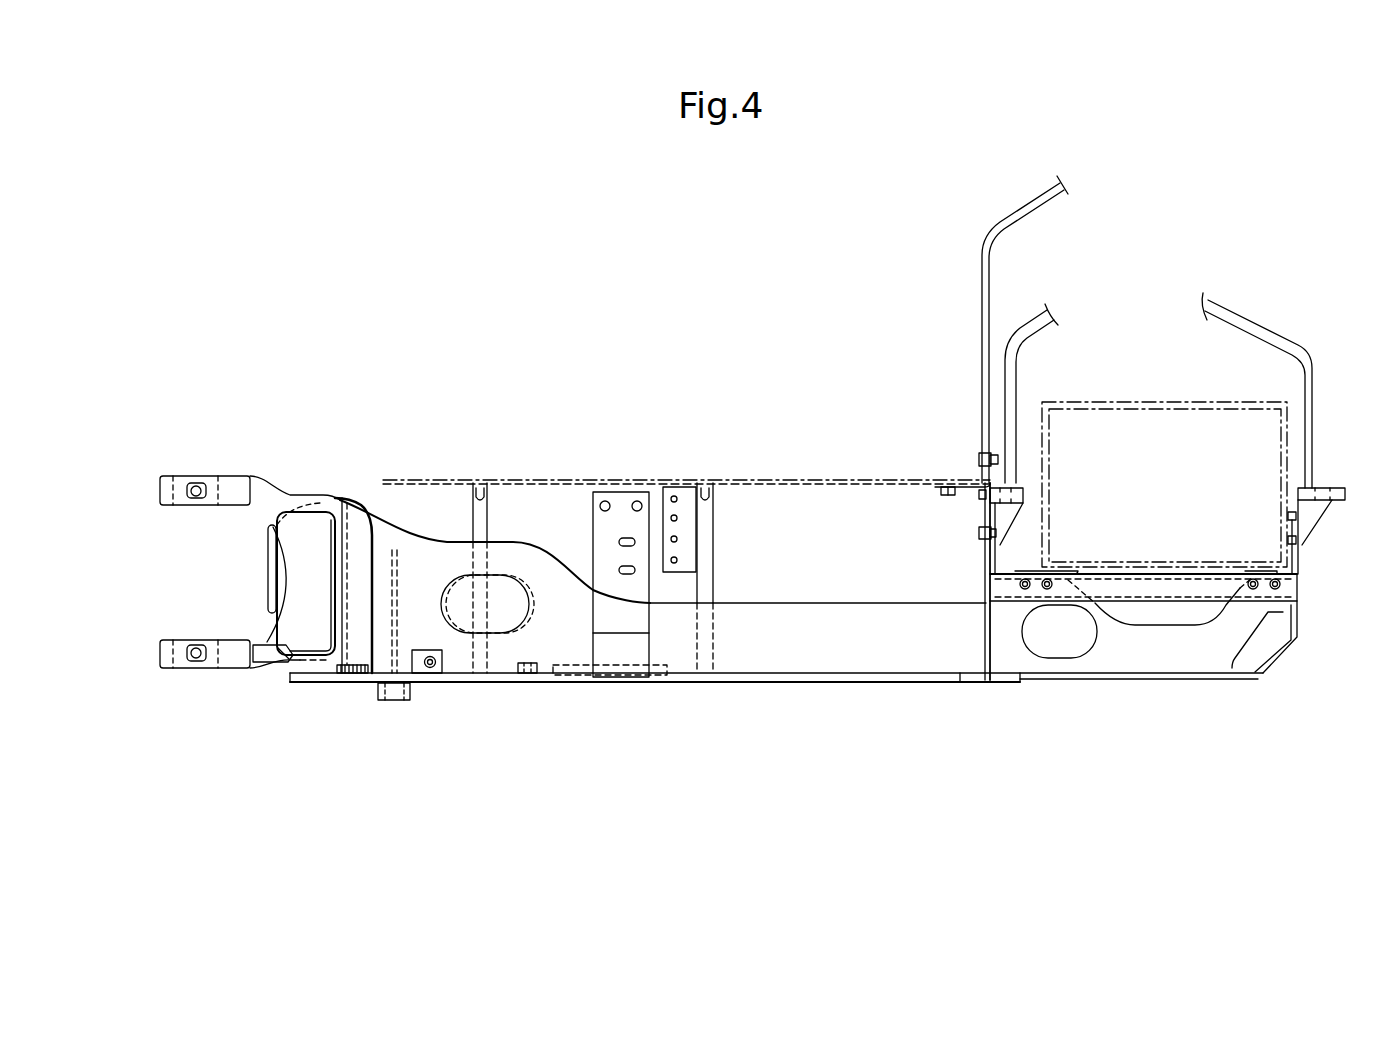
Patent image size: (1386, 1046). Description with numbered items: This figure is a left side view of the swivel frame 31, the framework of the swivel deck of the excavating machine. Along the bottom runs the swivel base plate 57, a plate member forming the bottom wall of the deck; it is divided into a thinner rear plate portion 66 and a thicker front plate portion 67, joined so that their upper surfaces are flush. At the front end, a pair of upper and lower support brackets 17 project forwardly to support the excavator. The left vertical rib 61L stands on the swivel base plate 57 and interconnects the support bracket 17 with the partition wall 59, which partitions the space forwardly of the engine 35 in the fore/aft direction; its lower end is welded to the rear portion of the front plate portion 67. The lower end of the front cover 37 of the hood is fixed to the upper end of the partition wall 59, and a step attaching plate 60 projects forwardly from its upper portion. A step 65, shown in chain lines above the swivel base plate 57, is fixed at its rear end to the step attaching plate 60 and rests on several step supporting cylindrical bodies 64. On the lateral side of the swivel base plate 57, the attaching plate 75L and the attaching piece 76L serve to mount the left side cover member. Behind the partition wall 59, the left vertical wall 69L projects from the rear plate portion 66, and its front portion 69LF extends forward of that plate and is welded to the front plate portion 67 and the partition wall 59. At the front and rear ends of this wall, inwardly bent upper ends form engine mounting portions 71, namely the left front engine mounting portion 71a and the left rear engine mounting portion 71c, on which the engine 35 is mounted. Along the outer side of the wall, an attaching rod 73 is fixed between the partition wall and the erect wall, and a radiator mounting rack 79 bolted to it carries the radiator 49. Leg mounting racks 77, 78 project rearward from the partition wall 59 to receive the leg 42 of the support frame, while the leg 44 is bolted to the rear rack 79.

The support bracket 17 is at (163, 492).
The swivel frame 31 is at (750, 706).
The engine 35 is at (1250, 402).
The front cover 37 is at (981, 292).
The leg 42 is at (1005, 370).
The leg 44 is at (1310, 385).
The radiator 49 is at (1200, 400).
The swivel base plate 57 is at (1027, 742).
The partition wall 59 is at (987, 482).
The step attaching plate 60 is at (958, 483).
The vertical rib 61L is at (790, 613).
The step supporting cylindrical body 64 is at (483, 515).
The step 65 is at (608, 483).
The rear plate portion 66 is at (1050, 678).
The front plate portion 67 is at (900, 678).
The vertical wall 69L is at (1168, 654).
The front portion of vertical wall 69LF is at (1000, 625).
The engine mounting portion 71 is at (1149, 512).
The left front engine mounting portion 71a is at (1045, 580).
The left rear engine mounting portion 71c is at (1262, 580).
The attaching rod 73 is at (1167, 587).
The attaching plate 75L is at (622, 620).
The attaching piece 76L is at (423, 668).
The leg mounting rack 77 is at (1153, 451).
The leg mounting rack 78 is at (1165, 485).
The radiator mounting rack 79 is at (1318, 498).